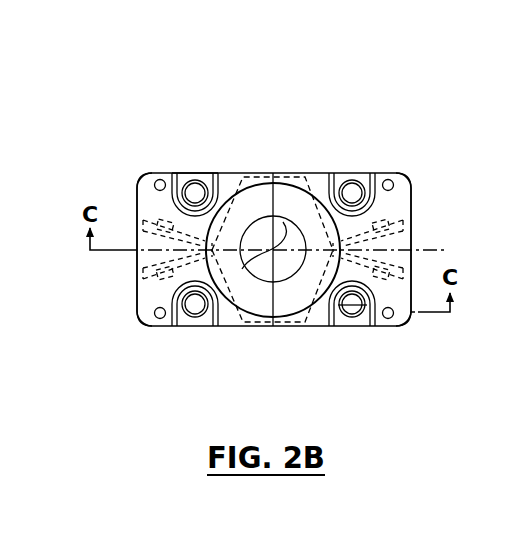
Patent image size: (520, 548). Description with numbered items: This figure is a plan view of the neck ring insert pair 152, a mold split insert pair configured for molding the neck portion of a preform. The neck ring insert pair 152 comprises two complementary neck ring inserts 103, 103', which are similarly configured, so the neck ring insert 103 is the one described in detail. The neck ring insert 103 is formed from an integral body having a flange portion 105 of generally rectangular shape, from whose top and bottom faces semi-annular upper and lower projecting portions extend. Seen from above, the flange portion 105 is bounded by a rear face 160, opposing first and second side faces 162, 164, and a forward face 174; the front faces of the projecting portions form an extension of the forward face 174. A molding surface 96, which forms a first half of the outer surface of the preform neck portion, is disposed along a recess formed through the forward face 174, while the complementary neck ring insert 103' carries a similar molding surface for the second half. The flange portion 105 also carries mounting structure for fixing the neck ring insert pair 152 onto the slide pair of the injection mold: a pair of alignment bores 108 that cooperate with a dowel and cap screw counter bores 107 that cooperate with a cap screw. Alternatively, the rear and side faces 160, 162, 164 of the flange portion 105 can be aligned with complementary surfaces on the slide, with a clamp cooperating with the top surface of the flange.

The neck ring insert pair 152 is at (376, 130).
The neck ring insert 103 is at (121, 308).
The complementary neck ring insert 103' is at (451, 292).
The flange portion 105 is at (159, 198).
The cap screw counter bores 107 is at (194, 180).
The alignment bores 108 is at (166, 176).
The first side face 162 is at (233, 171).
The second side face 164 is at (236, 330).
The molding surface 96 is at (273, 249).
The forward face 174 is at (280, 306).
The rear face 160 is at (134, 273).